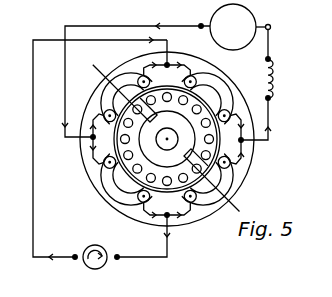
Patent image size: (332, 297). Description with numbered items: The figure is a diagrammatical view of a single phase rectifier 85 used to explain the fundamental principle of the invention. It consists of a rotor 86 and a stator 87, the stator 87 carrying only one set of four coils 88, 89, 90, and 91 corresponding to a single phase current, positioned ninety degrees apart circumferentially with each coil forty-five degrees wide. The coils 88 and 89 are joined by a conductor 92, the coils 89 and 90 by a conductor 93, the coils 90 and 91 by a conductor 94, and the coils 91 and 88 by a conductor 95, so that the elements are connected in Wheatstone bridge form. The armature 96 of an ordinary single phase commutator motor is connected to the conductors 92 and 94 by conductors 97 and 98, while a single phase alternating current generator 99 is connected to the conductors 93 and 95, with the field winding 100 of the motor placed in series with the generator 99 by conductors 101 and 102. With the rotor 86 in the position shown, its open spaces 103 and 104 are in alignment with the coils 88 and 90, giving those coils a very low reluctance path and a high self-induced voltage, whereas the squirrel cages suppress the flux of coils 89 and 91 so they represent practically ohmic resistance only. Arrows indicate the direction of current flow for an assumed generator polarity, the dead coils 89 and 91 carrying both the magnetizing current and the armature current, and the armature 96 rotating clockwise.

The single phase rectifier 85 is at (251, 168).
The rotor 86 is at (167, 139).
The stator 87 is at (243, 188).
The coil 88 is at (112, 90).
The coil 89 is at (213, 83).
The coil 90 is at (213, 199).
The coil 91 is at (115, 188).
The conductor 92 is at (142, 54).
The conductor 93 is at (249, 144).
The conductor 94 is at (158, 216).
The conductor 95 is at (80, 156).
The armature 96 is at (98, 245).
The conductor 97 is at (33, 225).
The conductor 98 is at (167, 248).
The single phase alternating current generator 99 is at (240, 27).
The field winding 100 is at (275, 70).
The conductor 101 is at (268, 115).
The conductor 102 is at (100, 26).
The open space 103 is at (128, 96).
The open space 104 is at (212, 180).